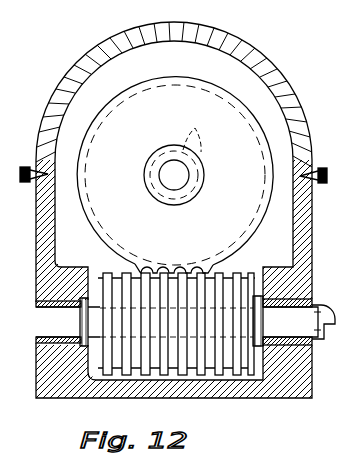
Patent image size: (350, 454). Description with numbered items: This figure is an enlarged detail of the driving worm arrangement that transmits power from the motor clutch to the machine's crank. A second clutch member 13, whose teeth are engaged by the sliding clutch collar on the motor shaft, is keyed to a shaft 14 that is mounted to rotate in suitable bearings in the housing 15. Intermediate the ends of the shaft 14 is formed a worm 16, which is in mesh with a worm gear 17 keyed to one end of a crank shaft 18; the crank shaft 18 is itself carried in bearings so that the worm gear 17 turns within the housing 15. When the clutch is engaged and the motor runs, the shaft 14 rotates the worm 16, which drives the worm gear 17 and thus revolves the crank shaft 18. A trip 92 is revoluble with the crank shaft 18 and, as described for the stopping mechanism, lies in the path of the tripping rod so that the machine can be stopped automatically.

The second clutch member 13 is at (324, 311).
The shaft 14 is at (177, 322).
The housing 15 is at (308, 270).
The worm 16 is at (209, 368).
The worm gear 17 is at (175, 175).
The crank shaft 18 is at (174, 175).
The trip 92 is at (190, 175).